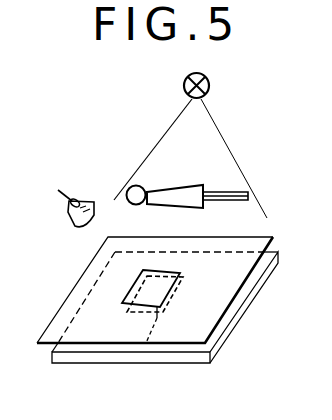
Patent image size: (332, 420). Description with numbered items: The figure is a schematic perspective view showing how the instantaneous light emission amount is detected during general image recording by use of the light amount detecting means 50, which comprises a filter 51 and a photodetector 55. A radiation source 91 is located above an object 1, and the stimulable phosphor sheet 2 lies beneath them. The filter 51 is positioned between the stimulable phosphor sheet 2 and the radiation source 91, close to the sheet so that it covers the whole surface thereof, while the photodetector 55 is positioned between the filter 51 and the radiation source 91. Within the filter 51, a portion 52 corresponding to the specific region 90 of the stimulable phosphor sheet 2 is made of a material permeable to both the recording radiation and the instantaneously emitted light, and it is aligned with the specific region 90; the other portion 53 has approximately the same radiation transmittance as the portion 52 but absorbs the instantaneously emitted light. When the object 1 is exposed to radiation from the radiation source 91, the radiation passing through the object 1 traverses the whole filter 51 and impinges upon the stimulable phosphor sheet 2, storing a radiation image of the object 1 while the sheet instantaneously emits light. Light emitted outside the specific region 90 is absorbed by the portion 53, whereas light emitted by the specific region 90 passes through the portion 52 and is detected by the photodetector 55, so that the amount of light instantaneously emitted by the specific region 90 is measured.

The object 1 is at (182, 185).
The stimulable phosphor sheet 2 is at (225, 342).
The light amount detecting means 50 is at (60, 232).
The filter 51 is at (81, 345).
The filter portion 52 is at (142, 272).
The filter portion 53 is at (90, 308).
The photodetector 55 is at (89, 197).
The specific region 90 is at (146, 343).
The radiation source 91 is at (210, 84).